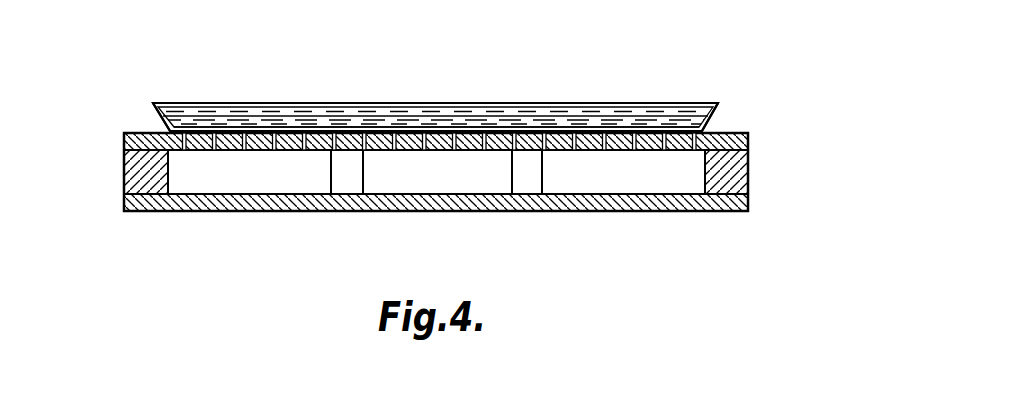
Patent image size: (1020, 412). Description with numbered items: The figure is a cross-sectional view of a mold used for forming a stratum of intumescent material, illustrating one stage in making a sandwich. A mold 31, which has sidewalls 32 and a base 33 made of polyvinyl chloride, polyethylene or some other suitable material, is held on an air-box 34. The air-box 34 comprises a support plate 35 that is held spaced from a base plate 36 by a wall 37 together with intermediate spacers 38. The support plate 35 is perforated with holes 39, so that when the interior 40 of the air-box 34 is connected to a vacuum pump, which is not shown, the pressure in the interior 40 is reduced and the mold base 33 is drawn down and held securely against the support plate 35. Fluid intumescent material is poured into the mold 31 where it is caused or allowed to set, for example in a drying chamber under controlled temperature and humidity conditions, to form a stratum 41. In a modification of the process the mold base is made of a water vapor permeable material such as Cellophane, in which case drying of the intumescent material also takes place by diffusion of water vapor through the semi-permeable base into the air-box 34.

The mold 31 is at (722, 119).
The sidewalls 32 is at (170, 103).
The base 33 is at (353, 133).
The air-box 34 is at (756, 208).
The support plate 35 is at (140, 133).
The base plate 36 is at (205, 205).
The wall 37 is at (138, 180).
The intermediate spacers 38 is at (350, 175).
The holes 39 is at (631, 151).
The interior 40 is at (680, 187).
The stratum 41 is at (483, 127).